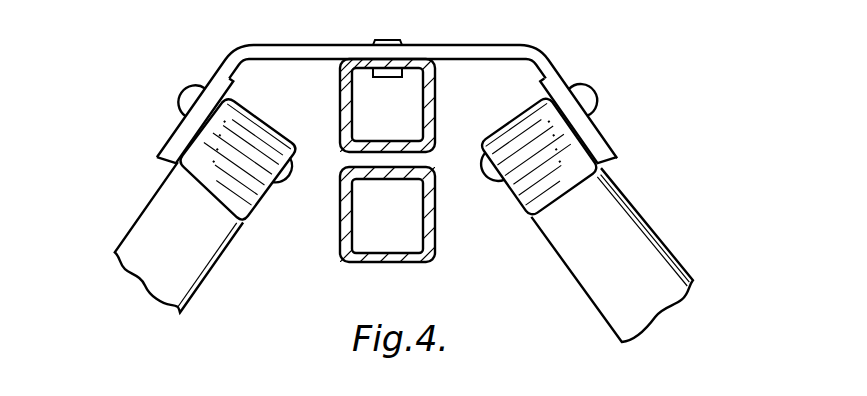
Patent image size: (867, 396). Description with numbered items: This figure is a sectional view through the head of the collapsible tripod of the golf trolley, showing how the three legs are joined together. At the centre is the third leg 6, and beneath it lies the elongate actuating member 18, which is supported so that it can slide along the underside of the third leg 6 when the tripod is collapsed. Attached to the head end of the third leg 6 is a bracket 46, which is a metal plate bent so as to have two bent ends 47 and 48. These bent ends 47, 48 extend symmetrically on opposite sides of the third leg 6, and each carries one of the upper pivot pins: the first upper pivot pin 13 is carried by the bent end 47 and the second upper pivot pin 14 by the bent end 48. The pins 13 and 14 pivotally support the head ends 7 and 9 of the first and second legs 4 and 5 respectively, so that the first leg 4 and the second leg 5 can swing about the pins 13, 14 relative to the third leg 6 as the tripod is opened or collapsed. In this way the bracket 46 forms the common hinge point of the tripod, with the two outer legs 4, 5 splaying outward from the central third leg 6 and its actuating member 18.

The first leg 4 is at (202, 252).
The second leg 5 is at (590, 271).
The third leg 6 is at (433, 125).
The head end of the first leg 7 is at (258, 127).
The head end of the second leg 9 is at (513, 130).
The first upper pivot pin 13 is at (183, 100).
The second upper pivot pin 14 is at (588, 102).
The elongate actuating member 18 is at (405, 263).
The bracket 46 is at (455, 52).
The bent end 47 is at (217, 88).
The bent end 48 is at (557, 80).